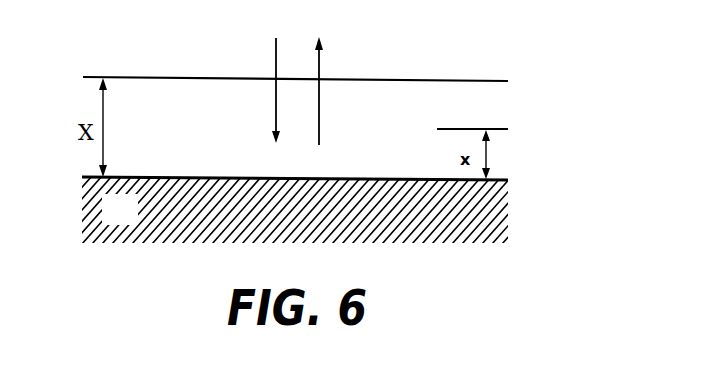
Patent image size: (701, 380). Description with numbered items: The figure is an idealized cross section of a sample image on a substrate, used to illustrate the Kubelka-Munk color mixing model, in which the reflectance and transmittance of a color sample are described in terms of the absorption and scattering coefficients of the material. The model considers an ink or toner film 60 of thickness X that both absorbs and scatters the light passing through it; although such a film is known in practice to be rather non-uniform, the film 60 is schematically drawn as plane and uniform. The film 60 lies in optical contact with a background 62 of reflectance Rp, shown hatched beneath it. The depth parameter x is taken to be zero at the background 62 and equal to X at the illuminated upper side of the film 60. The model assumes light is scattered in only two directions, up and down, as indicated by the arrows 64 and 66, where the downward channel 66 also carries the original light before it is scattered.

The ink or toner film 60 is at (198, 140).
The background 62 is at (497, 217).
The arrow 64 is at (274, 63).
The downward channel 66 is at (322, 63).